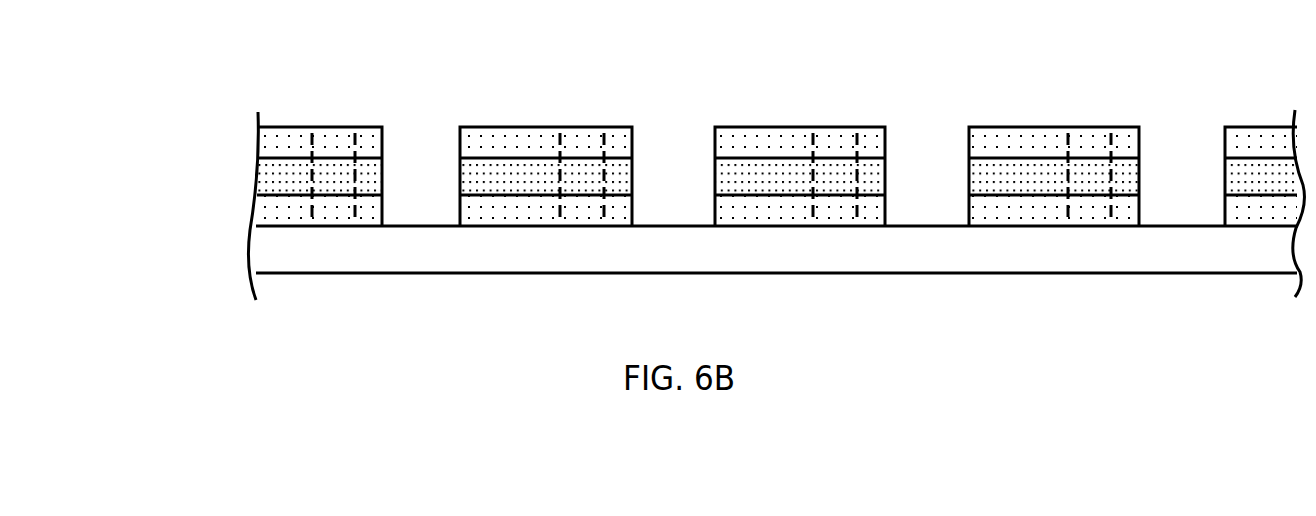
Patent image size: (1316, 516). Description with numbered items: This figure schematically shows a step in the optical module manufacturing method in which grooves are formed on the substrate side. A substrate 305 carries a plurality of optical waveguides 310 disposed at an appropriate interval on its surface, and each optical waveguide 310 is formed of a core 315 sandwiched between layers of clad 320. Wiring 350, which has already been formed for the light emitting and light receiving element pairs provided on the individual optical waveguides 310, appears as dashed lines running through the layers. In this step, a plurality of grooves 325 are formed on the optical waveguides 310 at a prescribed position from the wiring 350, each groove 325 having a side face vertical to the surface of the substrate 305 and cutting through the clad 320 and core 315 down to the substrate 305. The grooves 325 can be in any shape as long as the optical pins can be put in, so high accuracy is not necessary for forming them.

The substrate 305 is at (263, 253).
The optical waveguide 310 is at (666, 172).
The core 315 is at (263, 180).
The clad 320 is at (263, 141).
The groove 325 is at (416, 128).
The wiring 350 is at (355, 208).